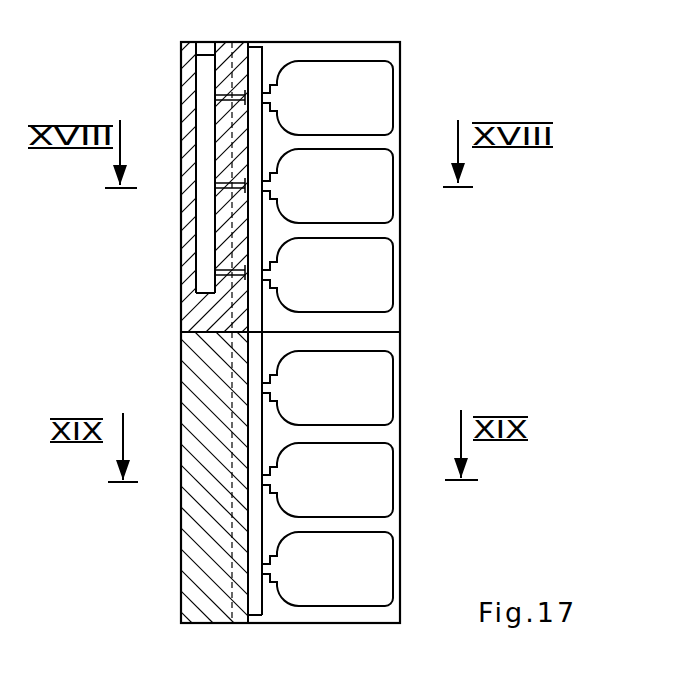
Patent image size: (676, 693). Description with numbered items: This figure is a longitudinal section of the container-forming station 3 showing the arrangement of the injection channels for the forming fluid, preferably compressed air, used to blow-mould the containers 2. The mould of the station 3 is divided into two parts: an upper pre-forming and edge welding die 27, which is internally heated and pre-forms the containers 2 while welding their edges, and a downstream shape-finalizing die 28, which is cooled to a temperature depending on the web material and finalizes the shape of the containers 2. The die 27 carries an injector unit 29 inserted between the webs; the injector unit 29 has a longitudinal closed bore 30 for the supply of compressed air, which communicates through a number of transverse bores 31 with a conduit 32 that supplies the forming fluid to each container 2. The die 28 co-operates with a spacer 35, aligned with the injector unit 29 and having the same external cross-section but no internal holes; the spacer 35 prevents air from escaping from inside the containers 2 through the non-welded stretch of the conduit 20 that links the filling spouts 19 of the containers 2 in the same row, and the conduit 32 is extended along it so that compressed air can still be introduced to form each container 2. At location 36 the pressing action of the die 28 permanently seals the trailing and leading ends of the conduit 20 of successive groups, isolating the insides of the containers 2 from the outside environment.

The containers 2 is at (356, 109).
The container-forming station 3 is at (558, 215).
The filling spouts 19 is at (268, 386).
The conduit 20 is at (262, 549).
The pre-forming and edge welding die 27 is at (448, 250).
The shape-finalizing die 28 is at (453, 377).
The injector unit 29 is at (175, 282).
The longitudinal closed bore 30 is at (200, 70).
The transverse bores 31 is at (196, 262).
The conduit for supplying forming fluid 32 is at (258, 228).
The spacer 35 is at (175, 542).
The location 36 is at (262, 623).